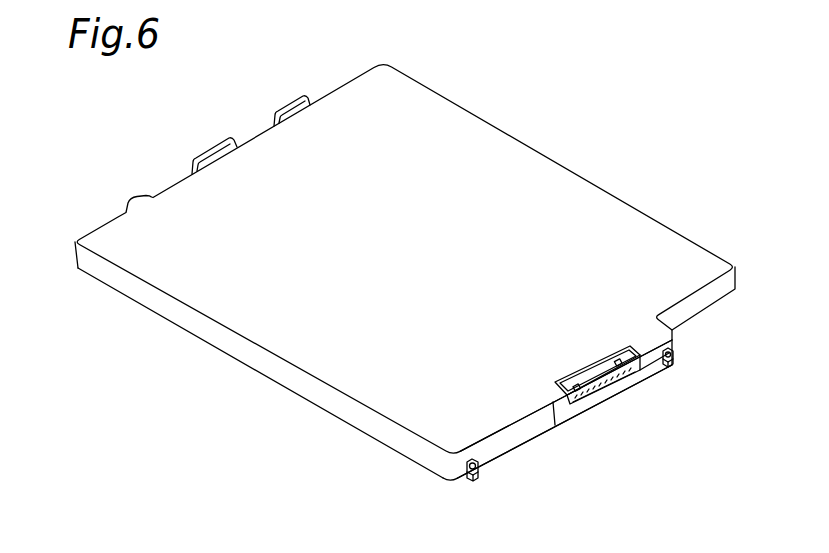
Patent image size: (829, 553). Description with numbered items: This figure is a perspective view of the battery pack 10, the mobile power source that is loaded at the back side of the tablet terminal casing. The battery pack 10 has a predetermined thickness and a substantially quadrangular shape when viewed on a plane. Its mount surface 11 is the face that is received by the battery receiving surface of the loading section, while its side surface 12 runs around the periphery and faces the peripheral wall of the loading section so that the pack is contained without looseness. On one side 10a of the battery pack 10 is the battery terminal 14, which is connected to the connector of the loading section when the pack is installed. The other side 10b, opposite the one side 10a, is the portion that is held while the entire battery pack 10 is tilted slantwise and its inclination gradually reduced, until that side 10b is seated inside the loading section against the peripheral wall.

The battery pack 10 is at (500, 164).
The one side of the battery pack 10a is at (523, 437).
The other side of the battery pack 10b is at (260, 134).
The mount surface 11 is at (382, 446).
The side surface 12 is at (189, 325).
The battery terminal 14 is at (617, 390).